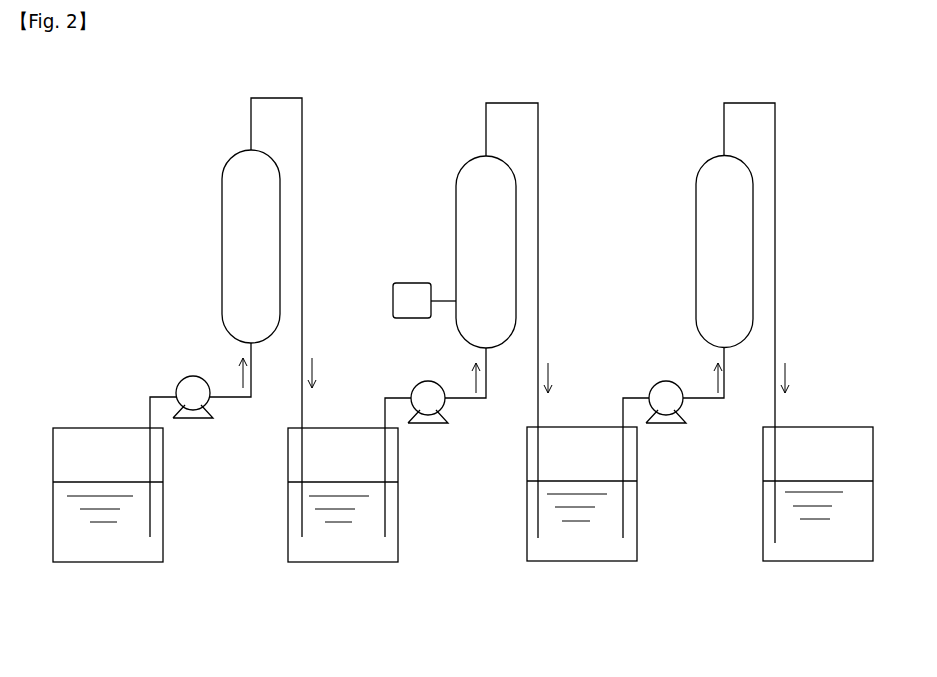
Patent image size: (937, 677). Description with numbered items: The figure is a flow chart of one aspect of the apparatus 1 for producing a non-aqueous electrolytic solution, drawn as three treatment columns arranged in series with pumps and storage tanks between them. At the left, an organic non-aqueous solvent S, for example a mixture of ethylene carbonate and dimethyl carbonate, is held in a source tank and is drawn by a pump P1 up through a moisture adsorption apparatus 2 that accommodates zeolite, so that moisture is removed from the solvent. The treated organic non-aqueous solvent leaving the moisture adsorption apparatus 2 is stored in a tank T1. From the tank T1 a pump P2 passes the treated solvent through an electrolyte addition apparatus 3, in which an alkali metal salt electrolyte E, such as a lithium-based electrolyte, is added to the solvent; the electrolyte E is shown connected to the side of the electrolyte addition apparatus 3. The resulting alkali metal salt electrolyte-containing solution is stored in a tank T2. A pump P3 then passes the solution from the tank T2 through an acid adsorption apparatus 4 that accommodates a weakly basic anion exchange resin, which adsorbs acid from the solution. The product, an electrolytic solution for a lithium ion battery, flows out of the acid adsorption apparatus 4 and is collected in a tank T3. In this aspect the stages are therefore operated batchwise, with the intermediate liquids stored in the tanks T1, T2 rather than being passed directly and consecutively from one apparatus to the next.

The apparatus for producing a non-aqueous electrolytic solution 1 is at (647, 70).
The moisture adsorption apparatus 2 is at (251, 246).
The electrolyte addition apparatus 3 is at (486, 252).
The acid adsorption apparatus 4 is at (724, 252).
The alkali metal salt electrolyte E is at (424, 300).
The pump P1 is at (182, 382).
The pump P2 is at (417, 387).
The pump P3 is at (654, 387).
The organic non-aqueous solvent S is at (112, 550).
The tank T1 is at (341, 547).
The tank T2 is at (582, 548).
The tank T3 is at (823, 547).